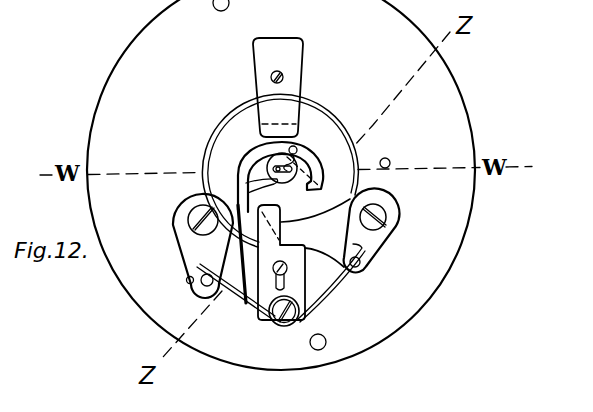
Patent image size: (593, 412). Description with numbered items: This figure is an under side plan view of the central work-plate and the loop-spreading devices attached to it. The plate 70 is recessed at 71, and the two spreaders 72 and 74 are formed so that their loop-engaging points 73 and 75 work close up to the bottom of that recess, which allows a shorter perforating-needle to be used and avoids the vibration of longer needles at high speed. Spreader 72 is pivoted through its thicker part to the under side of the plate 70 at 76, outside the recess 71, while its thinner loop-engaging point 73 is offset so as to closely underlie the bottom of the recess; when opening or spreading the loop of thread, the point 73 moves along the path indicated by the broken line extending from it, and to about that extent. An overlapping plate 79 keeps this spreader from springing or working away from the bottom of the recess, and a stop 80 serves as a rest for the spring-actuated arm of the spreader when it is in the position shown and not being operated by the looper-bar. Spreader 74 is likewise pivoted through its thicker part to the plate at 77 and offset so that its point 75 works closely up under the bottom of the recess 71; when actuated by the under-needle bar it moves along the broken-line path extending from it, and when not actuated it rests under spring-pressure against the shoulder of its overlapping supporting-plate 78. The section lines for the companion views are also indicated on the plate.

The plate 70 is at (281, 185).
The recess 71 is at (280, 170).
The spreader 72 is at (271, 222).
The loop-engaging point 73 is at (311, 169).
The spreader 74 is at (315, 233).
The loop-engaging point 75 is at (271, 177).
The pivot 76 is at (212, 230).
The pivot 77 is at (372, 230).
The overlapping supporting-plate 78 is at (281, 265).
The overlapping plate 79 is at (278, 87).
The stop 80 is at (186, 280).